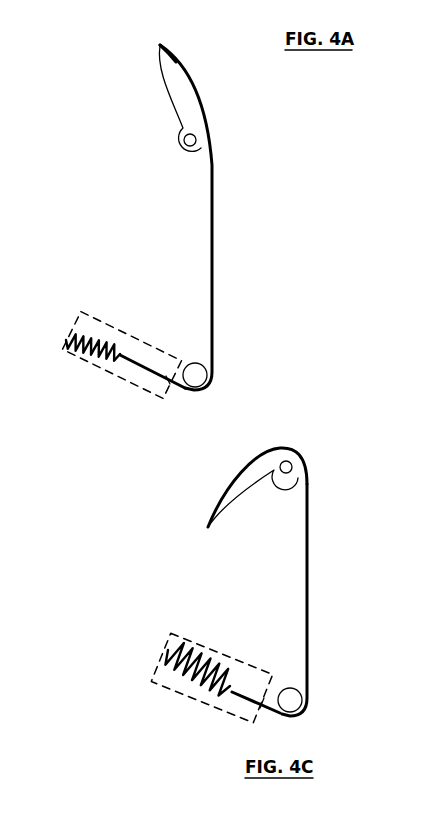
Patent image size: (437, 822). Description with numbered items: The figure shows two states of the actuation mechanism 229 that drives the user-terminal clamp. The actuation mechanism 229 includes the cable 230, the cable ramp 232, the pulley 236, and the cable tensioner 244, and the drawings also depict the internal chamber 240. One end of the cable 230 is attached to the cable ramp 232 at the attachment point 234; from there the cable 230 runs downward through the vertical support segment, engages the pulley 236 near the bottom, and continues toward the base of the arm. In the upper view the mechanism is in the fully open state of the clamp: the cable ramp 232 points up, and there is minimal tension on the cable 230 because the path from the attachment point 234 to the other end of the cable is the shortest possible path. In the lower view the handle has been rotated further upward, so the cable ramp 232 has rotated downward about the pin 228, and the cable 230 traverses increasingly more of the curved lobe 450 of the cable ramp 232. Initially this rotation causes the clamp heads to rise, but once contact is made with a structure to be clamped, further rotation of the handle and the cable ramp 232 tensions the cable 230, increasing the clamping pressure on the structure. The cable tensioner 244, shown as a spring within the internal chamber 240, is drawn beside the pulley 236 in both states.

In FIG. 4C, the pin 228 is at (276, 474).
In FIG. 4A, the actuation mechanism 229 is at (273, 203).
In FIG. 4C, the actuation mechanism 229 is at (157, 582).
In FIG. 4A, the cable 230 is at (213, 297).
In FIG. 4A, the cable ramp 232 is at (189, 126).
In FIG. 4C, the cable ramp 232 is at (286, 448).
In FIG. 4A, the attachment point 234 is at (160, 46).
In FIG. 4A, the pulley 236 is at (200, 373).
In FIG. 4A, the internal chamber 240 is at (127, 385).
In FIG. 4A, the cable tensioner 244 is at (110, 335).
In FIG. 4C, the cable tensioner 244 is at (215, 648).
In FIG. 4A, the curved lobe 450 is at (186, 155).
In FIG. 4C, the curved lobe 450 is at (308, 482).